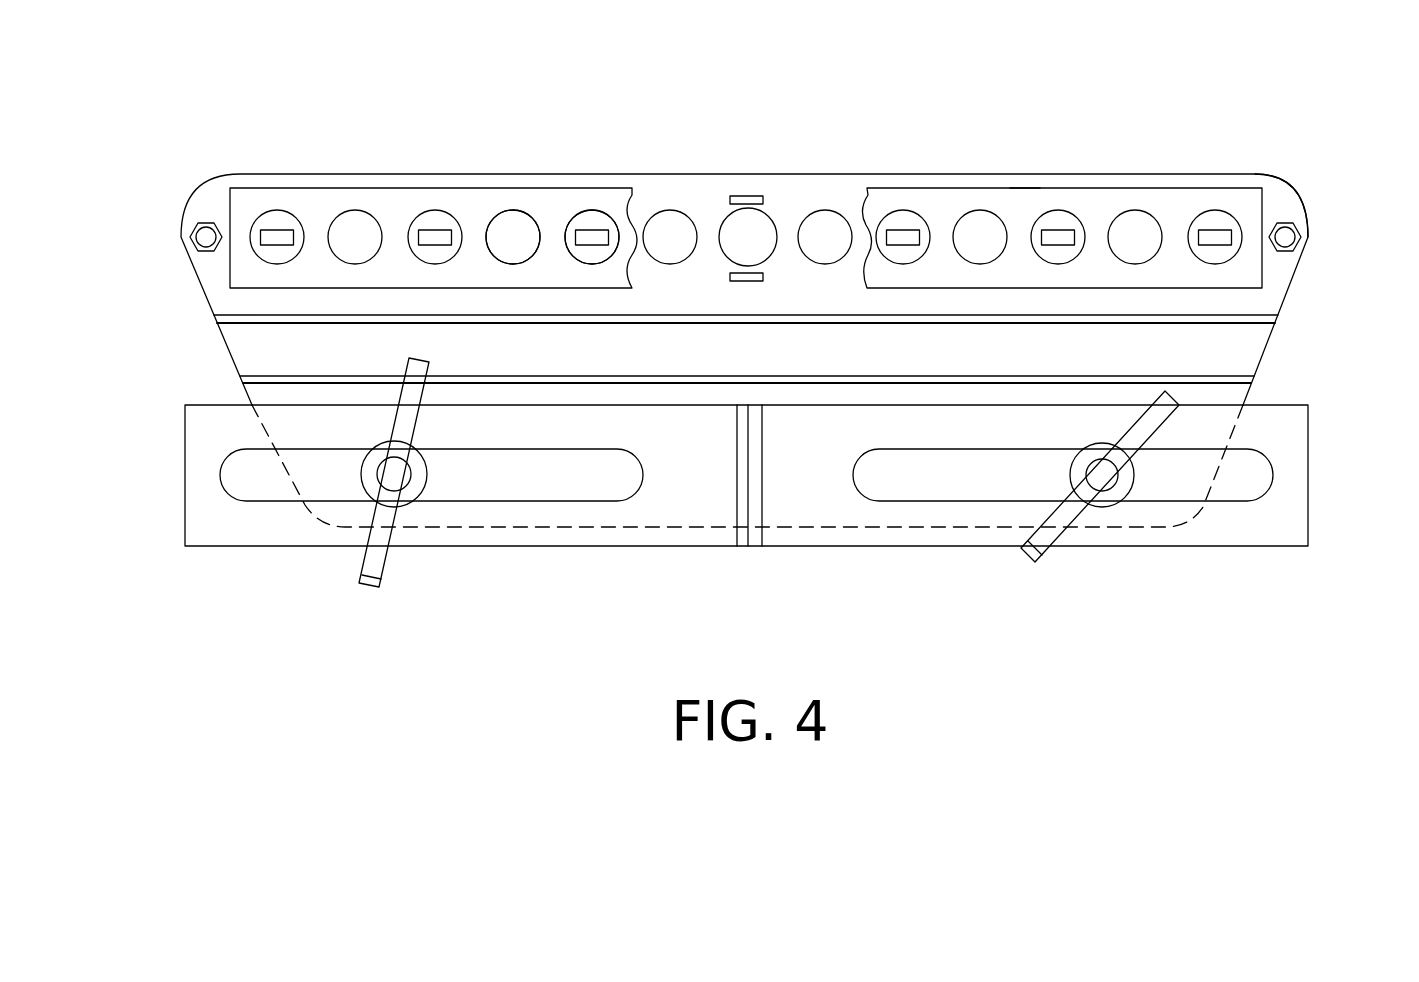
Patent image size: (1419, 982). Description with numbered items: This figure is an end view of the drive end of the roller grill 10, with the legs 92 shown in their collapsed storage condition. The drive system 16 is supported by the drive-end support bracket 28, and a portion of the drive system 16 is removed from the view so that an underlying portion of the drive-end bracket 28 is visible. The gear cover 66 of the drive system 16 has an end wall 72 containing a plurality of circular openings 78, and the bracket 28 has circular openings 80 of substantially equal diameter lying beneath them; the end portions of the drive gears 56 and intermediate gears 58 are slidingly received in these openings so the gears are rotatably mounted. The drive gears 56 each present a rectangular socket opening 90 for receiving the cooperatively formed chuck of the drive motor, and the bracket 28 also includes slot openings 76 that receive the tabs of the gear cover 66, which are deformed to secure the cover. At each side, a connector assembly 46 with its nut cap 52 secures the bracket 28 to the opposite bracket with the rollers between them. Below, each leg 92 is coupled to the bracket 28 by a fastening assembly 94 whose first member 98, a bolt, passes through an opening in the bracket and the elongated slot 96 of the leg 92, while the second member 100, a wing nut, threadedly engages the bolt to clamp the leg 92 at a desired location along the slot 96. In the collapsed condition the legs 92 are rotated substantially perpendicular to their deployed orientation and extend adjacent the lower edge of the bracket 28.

The roller grill 10 is at (741, 300).
The drive system 16 is at (1148, 180).
The drive-end support bracket 28 is at (1280, 203).
The connector assembly 46 is at (188, 218).
The nut cap 52 is at (206, 238).
The drive gear 56 is at (440, 220).
The intermediate gear 58 is at (513, 228).
The gear cover 66 is at (942, 205).
The end wall 72 is at (1025, 208).
The slot opening 76 is at (747, 197).
The circular opening 78 is at (580, 215).
The circular opening 80 is at (665, 225).
The socket opening 90 is at (430, 233).
The leg 92 is at (205, 525).
The fastening assembly 94 is at (360, 600).
The elongated slot 96 is at (252, 492).
The first member 98 is at (395, 478).
The second member 100 is at (380, 577).